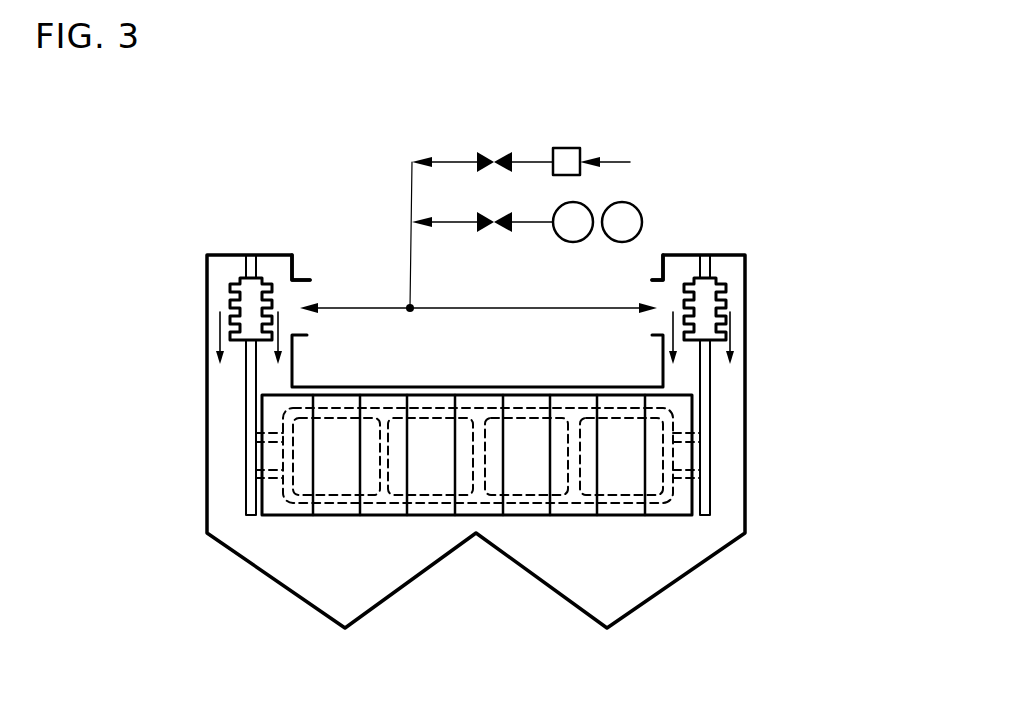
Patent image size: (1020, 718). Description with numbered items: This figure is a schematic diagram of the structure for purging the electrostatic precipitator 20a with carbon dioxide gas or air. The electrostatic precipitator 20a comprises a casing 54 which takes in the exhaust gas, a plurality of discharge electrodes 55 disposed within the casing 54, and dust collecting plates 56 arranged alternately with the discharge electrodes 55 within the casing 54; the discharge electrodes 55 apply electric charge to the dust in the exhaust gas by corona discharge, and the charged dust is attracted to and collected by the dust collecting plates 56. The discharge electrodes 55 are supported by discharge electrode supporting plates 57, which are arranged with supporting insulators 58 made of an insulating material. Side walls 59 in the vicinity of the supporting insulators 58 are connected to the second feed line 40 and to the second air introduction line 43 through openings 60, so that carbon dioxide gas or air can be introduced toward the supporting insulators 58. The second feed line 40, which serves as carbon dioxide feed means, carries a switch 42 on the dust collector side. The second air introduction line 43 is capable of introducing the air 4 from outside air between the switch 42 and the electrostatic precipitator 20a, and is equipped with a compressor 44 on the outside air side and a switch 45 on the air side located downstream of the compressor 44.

The air 4 is at (622, 162).
The second feed line 40 is at (532, 224).
The switch 42 is at (485, 234).
The second air introduction line 43 is at (537, 160).
The compressor 44 is at (575, 148).
The switch 45 is at (482, 152).
The casing 54 is at (207, 480).
The discharge electrodes 55 is at (525, 515).
The dust collecting plates 56 is at (575, 515).
The discharge electrode supporting plates 57 is at (250, 387).
The supporting insulators 58 is at (232, 293).
The side walls 59 is at (296, 258).
The openings 60 is at (305, 320).
The electrostatic precipitator 20a is at (760, 349).